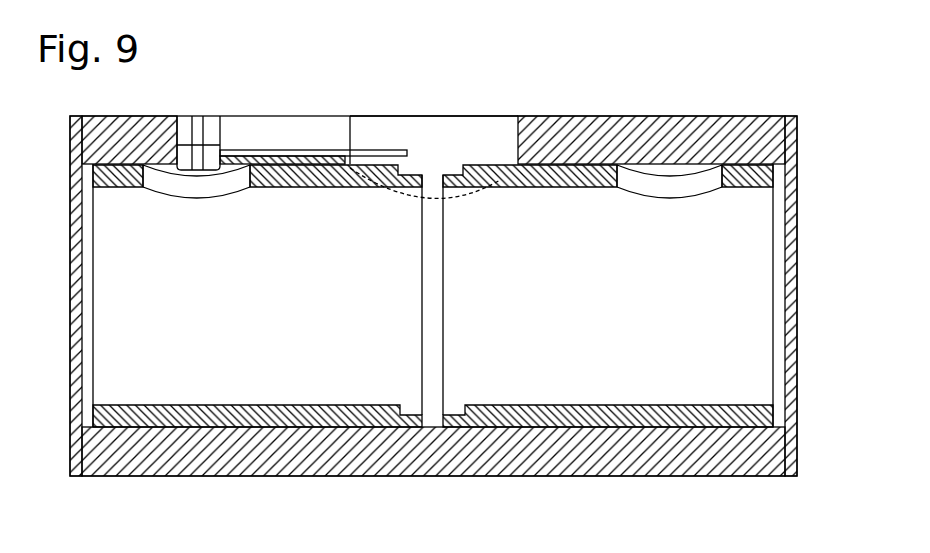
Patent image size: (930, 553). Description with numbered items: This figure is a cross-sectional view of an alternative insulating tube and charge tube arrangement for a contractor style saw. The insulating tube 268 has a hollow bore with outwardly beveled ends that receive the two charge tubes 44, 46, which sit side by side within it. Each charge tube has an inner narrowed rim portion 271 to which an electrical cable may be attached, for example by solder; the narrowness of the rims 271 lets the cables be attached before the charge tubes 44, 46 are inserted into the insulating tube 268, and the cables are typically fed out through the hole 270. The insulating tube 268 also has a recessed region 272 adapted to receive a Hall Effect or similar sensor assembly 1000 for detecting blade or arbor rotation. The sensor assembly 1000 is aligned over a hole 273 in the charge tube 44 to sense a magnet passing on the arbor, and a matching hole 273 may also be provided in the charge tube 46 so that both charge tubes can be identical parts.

The sensor assembly 1000 is at (202, 110).
The recessed region 272 is at (278, 126).
The inner narrowed rim portion 271 is at (414, 175).
The hole 270 is at (450, 137).
The insulating tube 268 is at (628, 138).
The hole 273 is at (200, 192).
The charge tube 44 is at (222, 417).
The charge tube 46 is at (585, 417).